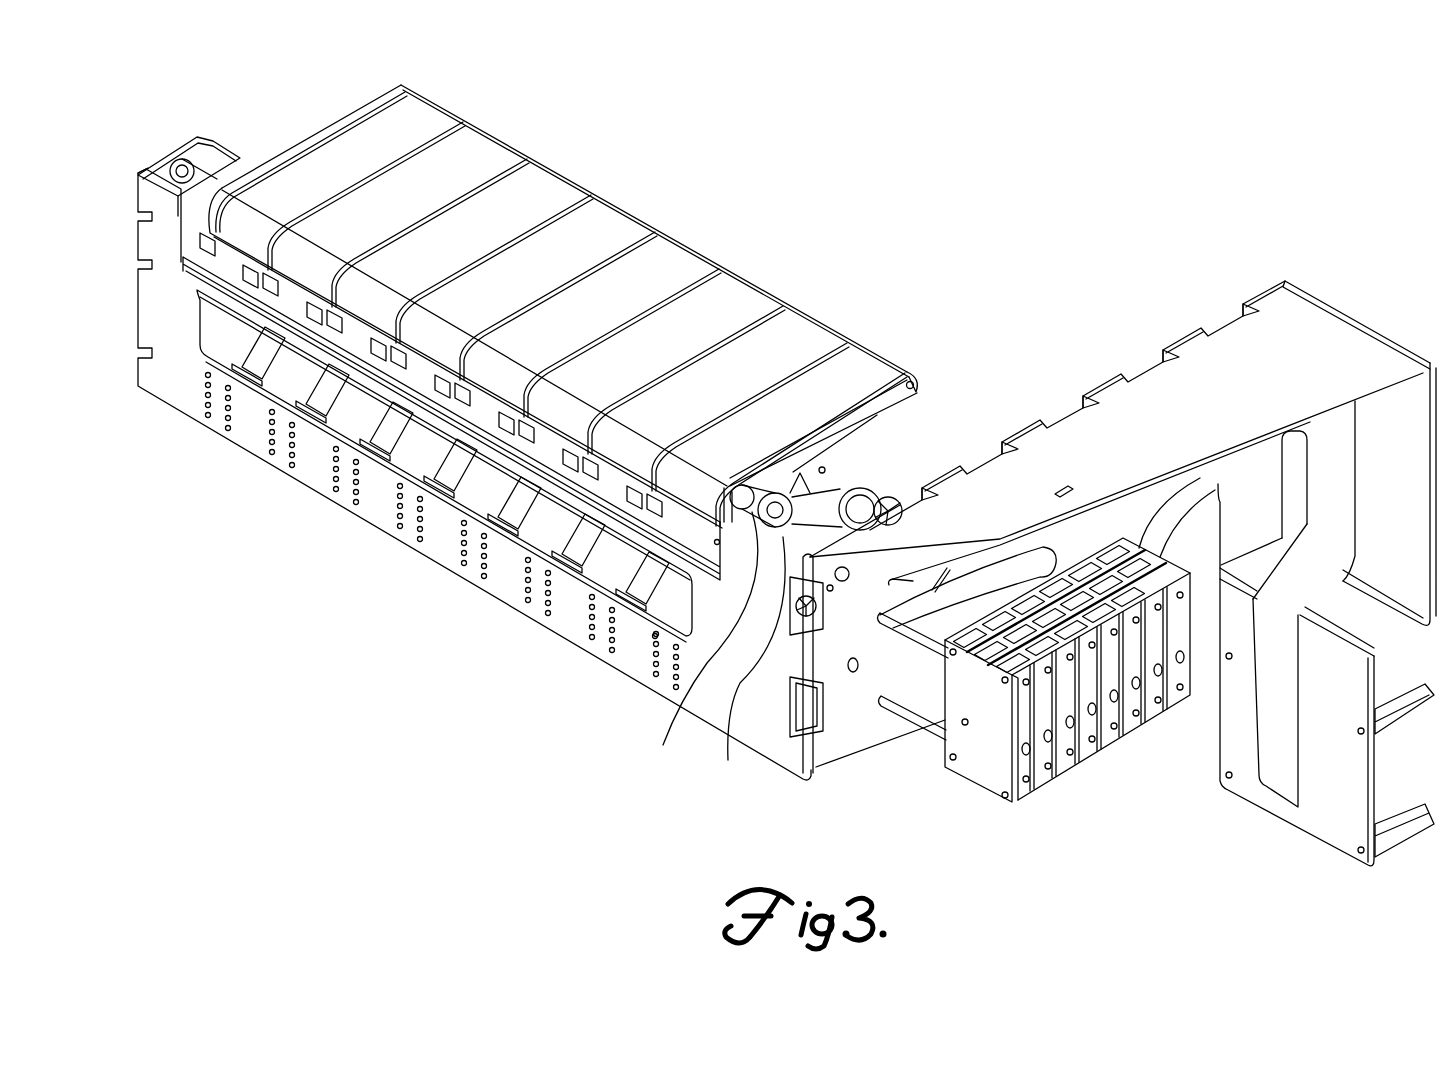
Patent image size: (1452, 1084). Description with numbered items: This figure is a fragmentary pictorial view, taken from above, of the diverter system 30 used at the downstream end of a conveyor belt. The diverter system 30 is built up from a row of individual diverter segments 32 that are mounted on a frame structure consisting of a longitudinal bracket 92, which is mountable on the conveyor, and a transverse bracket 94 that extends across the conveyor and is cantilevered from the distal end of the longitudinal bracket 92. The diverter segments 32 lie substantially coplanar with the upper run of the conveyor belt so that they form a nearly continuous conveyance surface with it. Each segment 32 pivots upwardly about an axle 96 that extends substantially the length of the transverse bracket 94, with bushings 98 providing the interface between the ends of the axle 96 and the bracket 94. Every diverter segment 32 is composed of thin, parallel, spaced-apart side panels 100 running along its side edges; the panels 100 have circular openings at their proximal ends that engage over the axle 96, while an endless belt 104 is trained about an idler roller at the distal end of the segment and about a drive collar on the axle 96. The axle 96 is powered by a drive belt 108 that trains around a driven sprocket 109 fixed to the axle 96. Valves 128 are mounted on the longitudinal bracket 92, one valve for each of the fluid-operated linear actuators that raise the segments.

The diverter system 30 is at (1006, 171).
The diverter segment 32 is at (512, 118).
The longitudinal bracket 92 is at (1257, 387).
The transverse bracket 94 is at (442, 540).
The axle 96 is at (205, 193).
The bushing 98 is at (172, 163).
The side panel 100 is at (878, 420).
The endless belt 104 is at (357, 147).
The drive belt 108 is at (827, 487).
The driven sprocket 109 is at (680, 627).
The valve 128 is at (1040, 780).